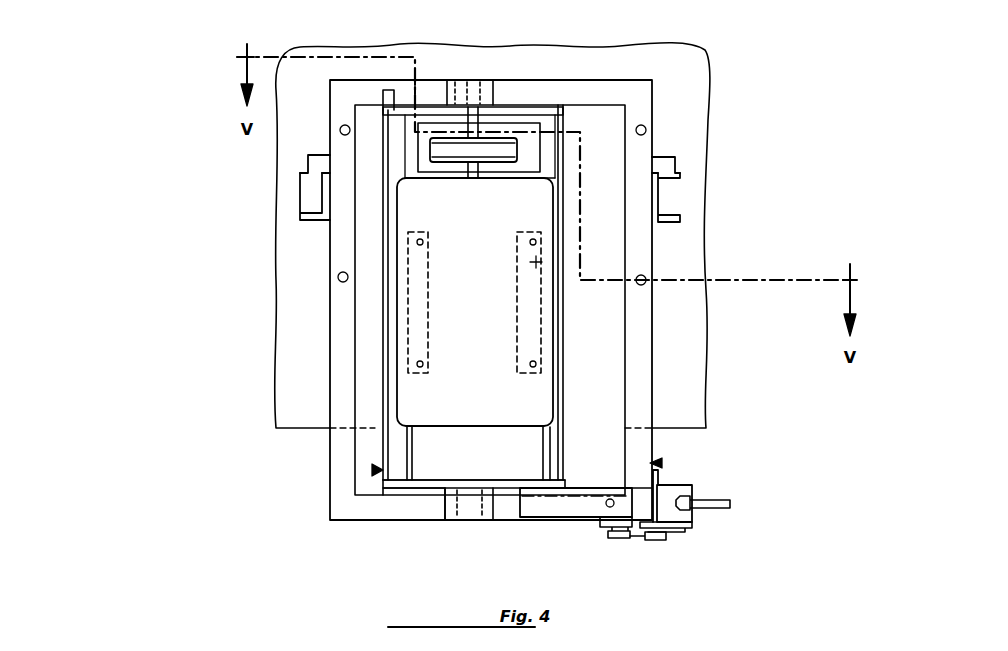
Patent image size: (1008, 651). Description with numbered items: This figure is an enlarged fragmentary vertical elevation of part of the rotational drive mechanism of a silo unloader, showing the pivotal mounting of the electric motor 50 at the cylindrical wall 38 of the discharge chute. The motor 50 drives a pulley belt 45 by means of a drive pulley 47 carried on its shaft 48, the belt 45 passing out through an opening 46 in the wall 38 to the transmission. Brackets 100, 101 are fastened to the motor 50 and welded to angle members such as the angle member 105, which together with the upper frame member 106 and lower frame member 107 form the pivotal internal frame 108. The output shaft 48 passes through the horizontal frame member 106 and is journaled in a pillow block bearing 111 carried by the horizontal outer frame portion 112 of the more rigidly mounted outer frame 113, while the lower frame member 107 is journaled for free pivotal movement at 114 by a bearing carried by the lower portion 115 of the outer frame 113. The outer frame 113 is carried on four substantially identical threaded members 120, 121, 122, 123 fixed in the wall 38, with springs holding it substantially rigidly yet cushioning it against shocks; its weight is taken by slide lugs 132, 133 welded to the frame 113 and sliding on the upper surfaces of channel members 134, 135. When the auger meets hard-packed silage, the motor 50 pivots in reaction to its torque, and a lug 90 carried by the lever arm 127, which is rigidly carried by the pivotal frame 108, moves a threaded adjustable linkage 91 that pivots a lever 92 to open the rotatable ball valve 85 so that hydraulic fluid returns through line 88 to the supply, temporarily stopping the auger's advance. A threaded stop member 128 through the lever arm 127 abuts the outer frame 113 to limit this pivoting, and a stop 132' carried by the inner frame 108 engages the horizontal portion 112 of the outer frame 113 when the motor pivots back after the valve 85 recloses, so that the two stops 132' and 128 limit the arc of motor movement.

The cylindrical wall 38 is at (690, 358).
The pulley belt 45 is at (505, 150).
The opening 46 is at (524, 168).
The drive pulley 47 is at (501, 134).
The shaft 48 is at (474, 126).
The electric motor 50 is at (432, 393).
The rotatable ball valve 85 is at (691, 491).
The hydraulic line 88 is at (714, 510).
The lug 90 is at (606, 526).
The threaded adjustable linkage 91 is at (657, 538).
The lever 92 is at (676, 529).
The bracket 100 is at (534, 262).
The bracket 101 is at (421, 234).
The angle member 105 is at (386, 305).
The upper frame member 106 is at (502, 114).
The lower frame member 107 is at (418, 484).
The internal frame 108 is at (376, 470).
The pillow block bearing 111 is at (462, 86).
The horizontal outer frame portion 112 is at (437, 93).
The outer frame 113 is at (660, 463).
The pivotal journal 114 is at (486, 512).
The lower portion of outer frame 115 is at (436, 505).
The threaded member 120 is at (645, 126).
The threaded member 121 is at (690, 280).
The threaded member 122 is at (338, 277).
The threaded member 123 is at (340, 130).
The lever arm 127 is at (565, 506).
The stop member 128 is at (606, 499).
The slide lug 132 is at (703, 124).
The stop 132' is at (340, 96).
The slide lug 133 is at (315, 158).
The channel member 134 is at (656, 196).
The channel member 135 is at (312, 213).